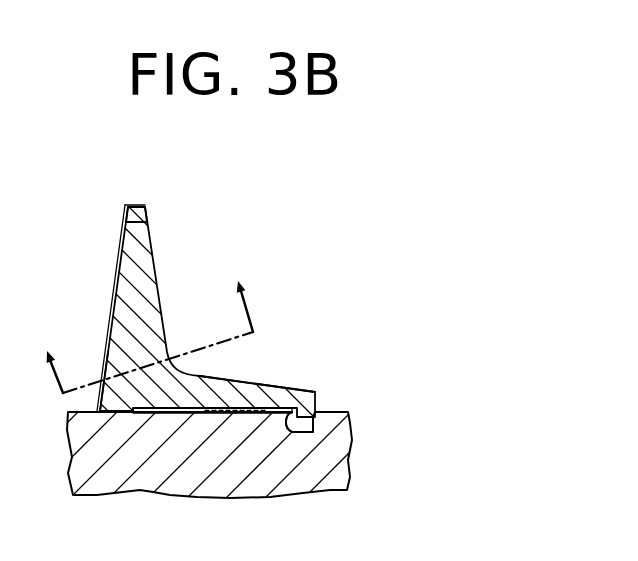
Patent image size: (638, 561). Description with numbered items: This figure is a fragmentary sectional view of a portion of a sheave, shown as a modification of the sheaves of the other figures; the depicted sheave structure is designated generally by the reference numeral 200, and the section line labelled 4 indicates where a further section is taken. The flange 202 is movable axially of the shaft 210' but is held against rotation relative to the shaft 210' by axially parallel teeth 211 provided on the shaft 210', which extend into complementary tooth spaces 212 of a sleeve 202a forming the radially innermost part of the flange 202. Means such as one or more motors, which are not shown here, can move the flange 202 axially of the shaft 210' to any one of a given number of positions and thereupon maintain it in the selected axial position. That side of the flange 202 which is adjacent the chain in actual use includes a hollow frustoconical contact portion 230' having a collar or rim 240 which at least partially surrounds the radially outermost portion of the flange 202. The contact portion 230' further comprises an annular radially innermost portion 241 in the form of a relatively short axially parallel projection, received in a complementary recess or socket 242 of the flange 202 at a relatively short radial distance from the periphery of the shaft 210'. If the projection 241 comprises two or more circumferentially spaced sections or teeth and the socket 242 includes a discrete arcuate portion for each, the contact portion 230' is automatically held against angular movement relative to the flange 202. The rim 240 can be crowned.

The section line 4- 4 is at (143, 315).
The joint assembly 200 is at (283, 301).
The flange 202 is at (135, 248).
The sleeve 202a is at (277, 387).
The shaft 210' is at (220, 473).
The axially parallel teeth 211 is at (250, 414).
The tooth spaces 212 is at (288, 437).
The hollow frustoconical contact portion 230' is at (92, 308).
The collar or rim 240 is at (131, 207).
The annular radially innermost portion 241 is at (107, 383).
The recess or socket 242 is at (122, 394).